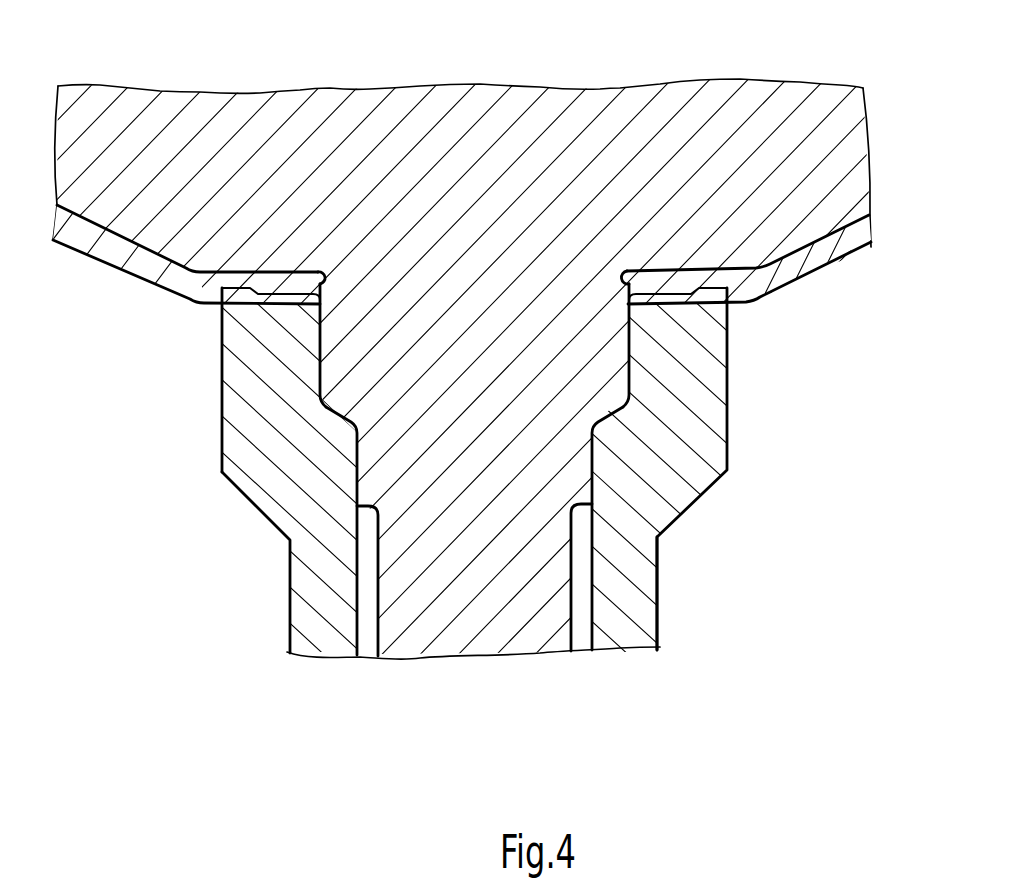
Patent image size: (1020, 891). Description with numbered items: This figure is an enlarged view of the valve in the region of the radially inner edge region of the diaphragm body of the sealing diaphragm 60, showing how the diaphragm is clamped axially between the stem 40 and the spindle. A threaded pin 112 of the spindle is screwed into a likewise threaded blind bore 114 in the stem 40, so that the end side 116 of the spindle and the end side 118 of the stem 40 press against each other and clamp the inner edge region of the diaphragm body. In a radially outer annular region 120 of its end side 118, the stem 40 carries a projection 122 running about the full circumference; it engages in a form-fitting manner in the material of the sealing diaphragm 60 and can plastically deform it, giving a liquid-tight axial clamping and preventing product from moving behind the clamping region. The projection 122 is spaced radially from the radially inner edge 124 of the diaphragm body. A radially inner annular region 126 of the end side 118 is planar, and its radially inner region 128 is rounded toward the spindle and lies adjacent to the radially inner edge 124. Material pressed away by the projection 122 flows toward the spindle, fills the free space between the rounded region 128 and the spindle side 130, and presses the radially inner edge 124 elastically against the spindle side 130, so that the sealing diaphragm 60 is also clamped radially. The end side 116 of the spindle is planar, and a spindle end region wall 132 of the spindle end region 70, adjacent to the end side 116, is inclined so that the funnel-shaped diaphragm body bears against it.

The stem 40 is at (638, 558).
The sealing diaphragm 60 is at (85, 264).
The spindle end region 70 is at (348, 118).
The pin 112 is at (600, 367).
The blind bore 114 is at (593, 527).
The end side 116 is at (672, 270).
The end side 118 is at (678, 299).
The radially outer annular region 120 is at (220, 318).
The projection 122 is at (244, 305).
The radially inner edge 124 is at (366, 395).
The radially inner annular region 126 is at (228, 325).
The radially inner region 128 is at (284, 305).
The spindle side 130 is at (366, 395).
The spindle end region wall 132 is at (115, 232).